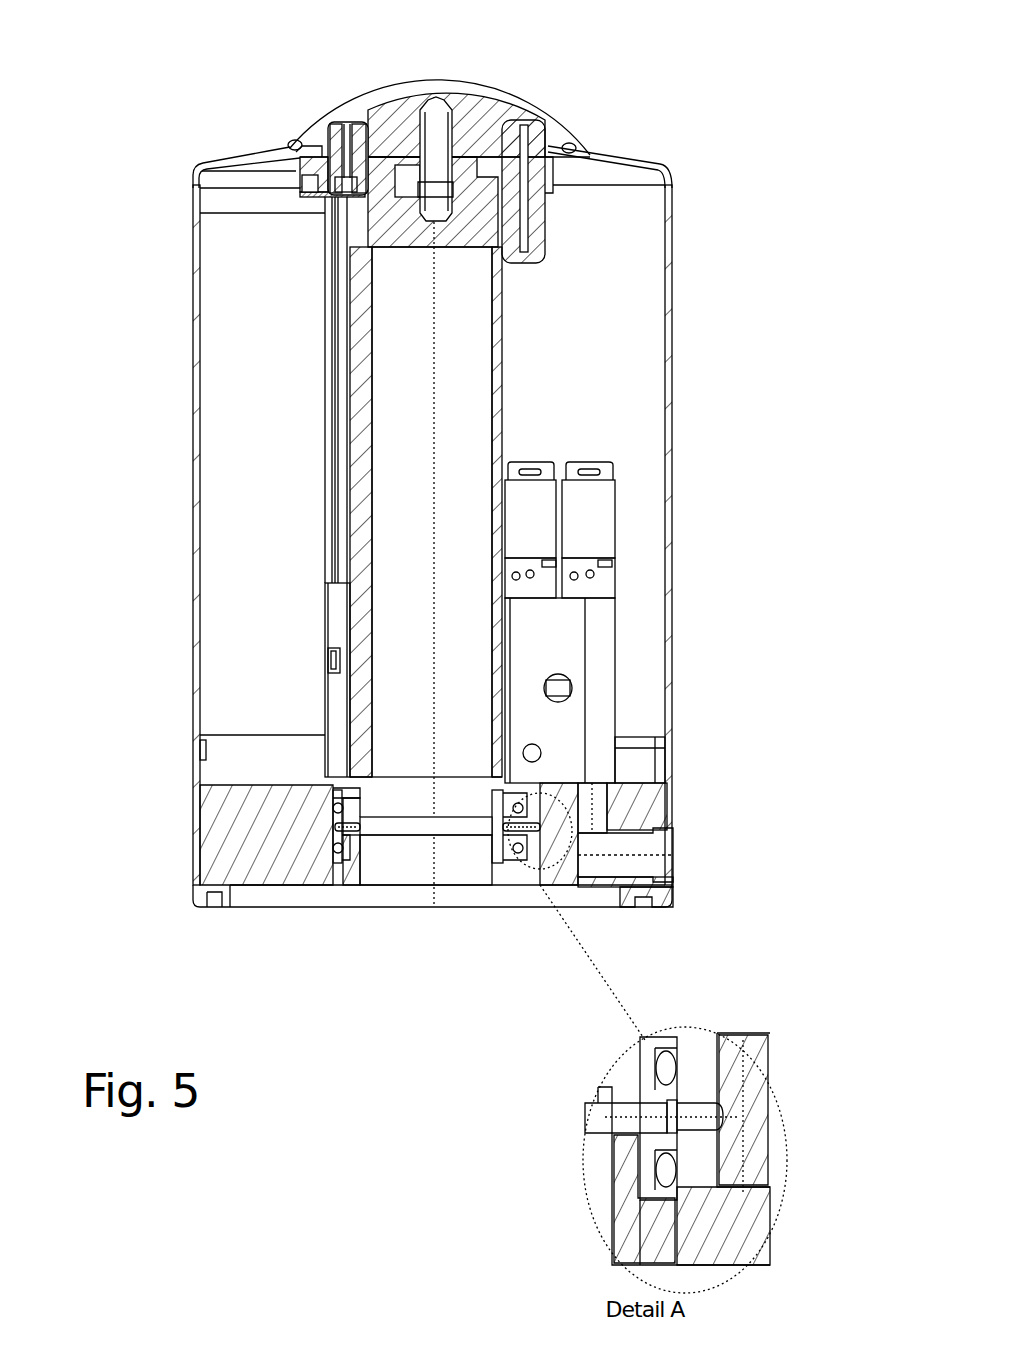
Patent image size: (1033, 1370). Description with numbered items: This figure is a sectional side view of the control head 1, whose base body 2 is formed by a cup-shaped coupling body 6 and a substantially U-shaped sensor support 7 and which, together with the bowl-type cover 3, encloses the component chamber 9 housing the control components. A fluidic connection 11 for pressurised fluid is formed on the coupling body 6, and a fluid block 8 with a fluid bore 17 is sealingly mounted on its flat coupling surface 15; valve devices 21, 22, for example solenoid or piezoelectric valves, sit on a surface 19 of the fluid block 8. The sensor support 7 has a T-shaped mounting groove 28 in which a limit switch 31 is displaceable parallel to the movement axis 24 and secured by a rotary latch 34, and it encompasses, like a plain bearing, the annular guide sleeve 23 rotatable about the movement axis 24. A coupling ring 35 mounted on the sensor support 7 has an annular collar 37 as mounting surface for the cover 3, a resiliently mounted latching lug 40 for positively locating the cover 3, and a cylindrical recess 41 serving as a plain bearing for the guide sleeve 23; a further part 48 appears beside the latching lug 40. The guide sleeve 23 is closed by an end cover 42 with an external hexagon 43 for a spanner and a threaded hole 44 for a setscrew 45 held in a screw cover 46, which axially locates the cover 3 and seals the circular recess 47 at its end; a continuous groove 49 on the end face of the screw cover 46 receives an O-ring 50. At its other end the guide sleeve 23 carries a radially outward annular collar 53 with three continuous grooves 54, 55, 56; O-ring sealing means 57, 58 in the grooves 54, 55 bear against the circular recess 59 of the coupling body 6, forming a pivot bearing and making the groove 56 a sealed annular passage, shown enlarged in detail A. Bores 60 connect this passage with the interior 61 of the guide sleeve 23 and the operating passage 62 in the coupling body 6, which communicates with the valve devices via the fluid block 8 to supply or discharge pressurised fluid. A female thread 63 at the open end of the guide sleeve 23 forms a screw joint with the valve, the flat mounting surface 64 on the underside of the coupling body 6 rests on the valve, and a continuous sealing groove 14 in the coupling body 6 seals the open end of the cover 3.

The control head 1 is at (186, 72).
The base body 2 is at (246, 918).
The cover 3 is at (638, 166).
The coupling body 6 is at (205, 820).
The sensor support 7 is at (360, 408).
The fluid block 8 is at (556, 640).
The component chamber 9 is at (617, 280).
The fluidic connection 11 is at (665, 842).
The continuous sealing groove 14 is at (202, 750).
The coupling surface 15 is at (600, 778).
The fluid bore 17 is at (595, 777).
The surface 19 is at (603, 592).
The valve device 21 is at (590, 547).
The valve device 22 is at (537, 503).
The guide sleeve 23 is at (503, 353).
The movement axis 24 is at (433, 367).
The mounting groove 28 is at (343, 310).
The limit switch 31 is at (340, 617).
The rotary latch 34 is at (328, 663).
The coupling ring 35 is at (316, 168).
The annular collar 37 is at (310, 158).
The latching lug 40 is at (527, 157).
The cylindrical recess 41 is at (348, 150).
The end cover 42 is at (393, 223).
The external hexagon 43 is at (400, 168).
The threaded hole 44 is at (478, 160).
The setscrew 45 is at (432, 116).
The screw cover 46 is at (472, 88).
The circular recess 47 is at (362, 124).
The flange 48 is at (555, 185).
The continuous groove 49 is at (288, 147).
The O-ring 50 is at (572, 150).
The annular collar 53 is at (340, 838).
The continuous groove 54 is at (515, 808).
The continuous groove 55 is at (518, 855).
The continuous groove 56 is at (512, 830).
The sealing means 57 is at (335, 808).
The sealing means 58 is at (345, 848).
The circular recess 59 is at (370, 795).
The bores 60 is at (335, 827).
The interior 61 is at (407, 862).
The operating passage 62 is at (557, 845).
The female thread 63 is at (358, 840).
The mounting surface 64 is at (608, 888).
The detail A is at (576, 916).